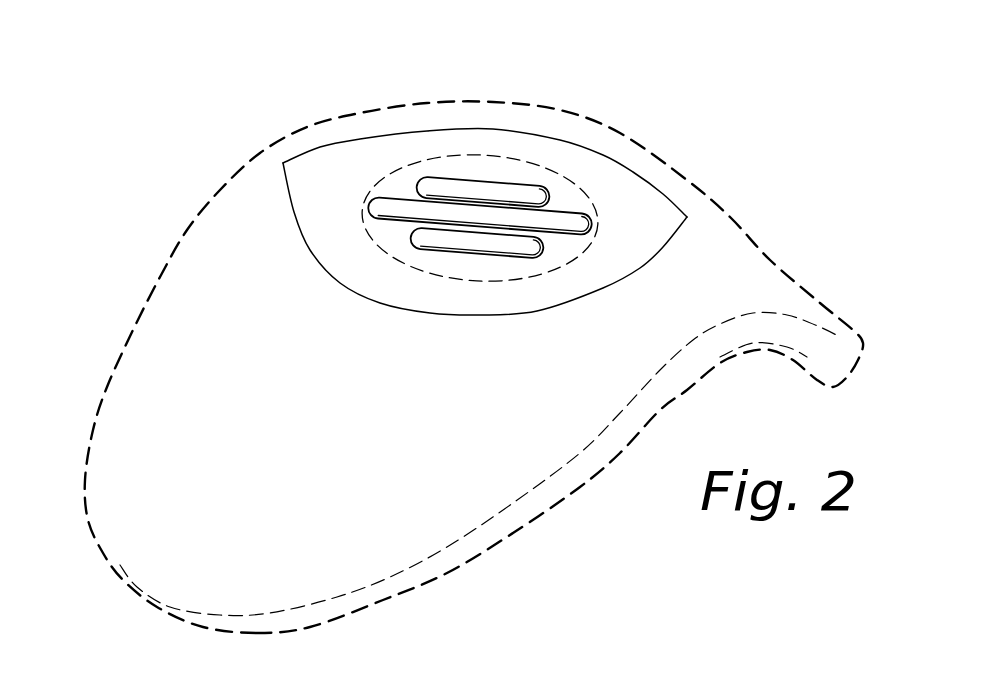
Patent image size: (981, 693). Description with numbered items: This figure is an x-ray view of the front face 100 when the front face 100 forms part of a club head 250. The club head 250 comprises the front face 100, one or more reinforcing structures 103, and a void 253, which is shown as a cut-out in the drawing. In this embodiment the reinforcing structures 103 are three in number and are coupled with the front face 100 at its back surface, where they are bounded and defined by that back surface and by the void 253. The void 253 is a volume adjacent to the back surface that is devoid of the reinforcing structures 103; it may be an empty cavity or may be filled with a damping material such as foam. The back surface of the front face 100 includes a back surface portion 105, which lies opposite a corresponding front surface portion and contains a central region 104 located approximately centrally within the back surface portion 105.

The club head 250 is at (167, 240).
The front face 100 is at (625, 192).
The void 253 is at (363, 164).
The reinforcing structure 103 is at (483, 174).
The central region 104 is at (470, 223).
The back surface portion 105 is at (560, 247).